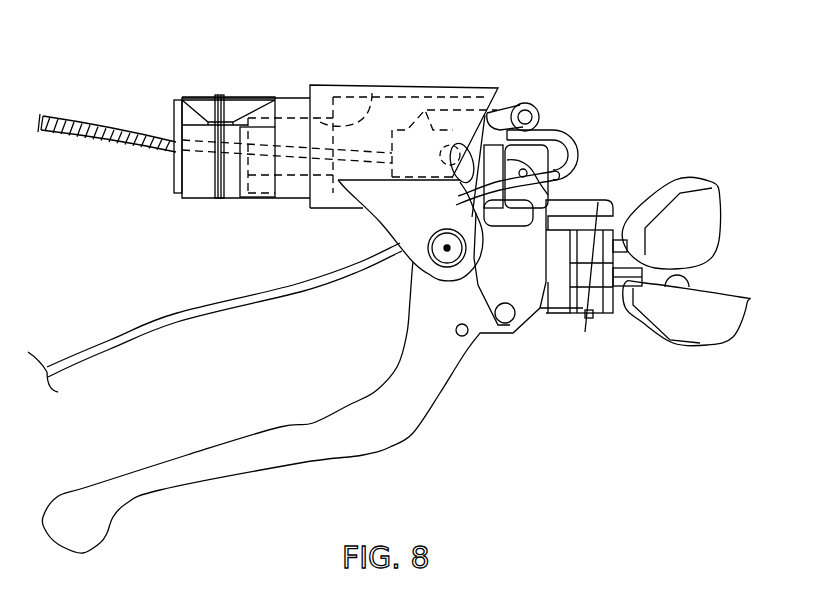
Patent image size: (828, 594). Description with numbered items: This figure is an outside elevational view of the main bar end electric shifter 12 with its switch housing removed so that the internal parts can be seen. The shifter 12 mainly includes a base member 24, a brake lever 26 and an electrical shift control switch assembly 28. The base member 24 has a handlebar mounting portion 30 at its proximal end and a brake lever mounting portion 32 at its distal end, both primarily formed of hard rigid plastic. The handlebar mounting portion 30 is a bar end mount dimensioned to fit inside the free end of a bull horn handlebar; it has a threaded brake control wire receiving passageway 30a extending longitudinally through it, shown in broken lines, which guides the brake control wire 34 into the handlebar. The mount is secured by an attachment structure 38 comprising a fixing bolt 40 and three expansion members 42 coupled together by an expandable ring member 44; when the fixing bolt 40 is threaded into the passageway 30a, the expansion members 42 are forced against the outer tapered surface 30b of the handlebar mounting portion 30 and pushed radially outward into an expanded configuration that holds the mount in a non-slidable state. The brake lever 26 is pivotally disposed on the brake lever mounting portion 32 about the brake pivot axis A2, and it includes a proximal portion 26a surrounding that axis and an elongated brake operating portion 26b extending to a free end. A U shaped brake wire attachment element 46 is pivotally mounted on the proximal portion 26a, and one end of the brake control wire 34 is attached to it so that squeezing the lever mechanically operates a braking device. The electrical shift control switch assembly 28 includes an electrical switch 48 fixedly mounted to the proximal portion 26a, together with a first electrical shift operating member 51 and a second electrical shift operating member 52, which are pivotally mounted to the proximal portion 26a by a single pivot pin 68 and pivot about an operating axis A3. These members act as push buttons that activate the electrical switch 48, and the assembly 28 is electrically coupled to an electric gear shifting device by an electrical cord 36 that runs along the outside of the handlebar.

The main bar end electric shifter 12 is at (604, 102).
The base member 24 is at (450, 82).
The brake lever 26 is at (312, 407).
The proximal portion 26a is at (553, 193).
The elongated brake operating portion 26b is at (183, 453).
The electrical shift control switch assembly 28 is at (541, 329).
The handlebar mounting portion 30 is at (293, 182).
The brake control wire receiving passageway 30a is at (368, 95).
The outer tapered surface 30b is at (263, 110).
The brake lever mounting portion 32 is at (380, 220).
The brake control wire 34 is at (68, 124).
The electrical cord 36 is at (177, 312).
The attachment structure 38 is at (211, 152).
The fixing bolt 40 is at (185, 112).
The expansion members 42 is at (200, 95).
The expandable ring member 44 is at (213, 173).
The U shaped brake wire attachment element 46 is at (423, 95).
The electrical switch 48 is at (482, 300).
The first electrical shift operating member 51 is at (703, 179).
The second electrical shift operating member 52 is at (740, 337).
The pivot pin 68 is at (592, 316).
The brake pivot axis A2 is at (445, 252).
The operating axis A3 is at (586, 328).